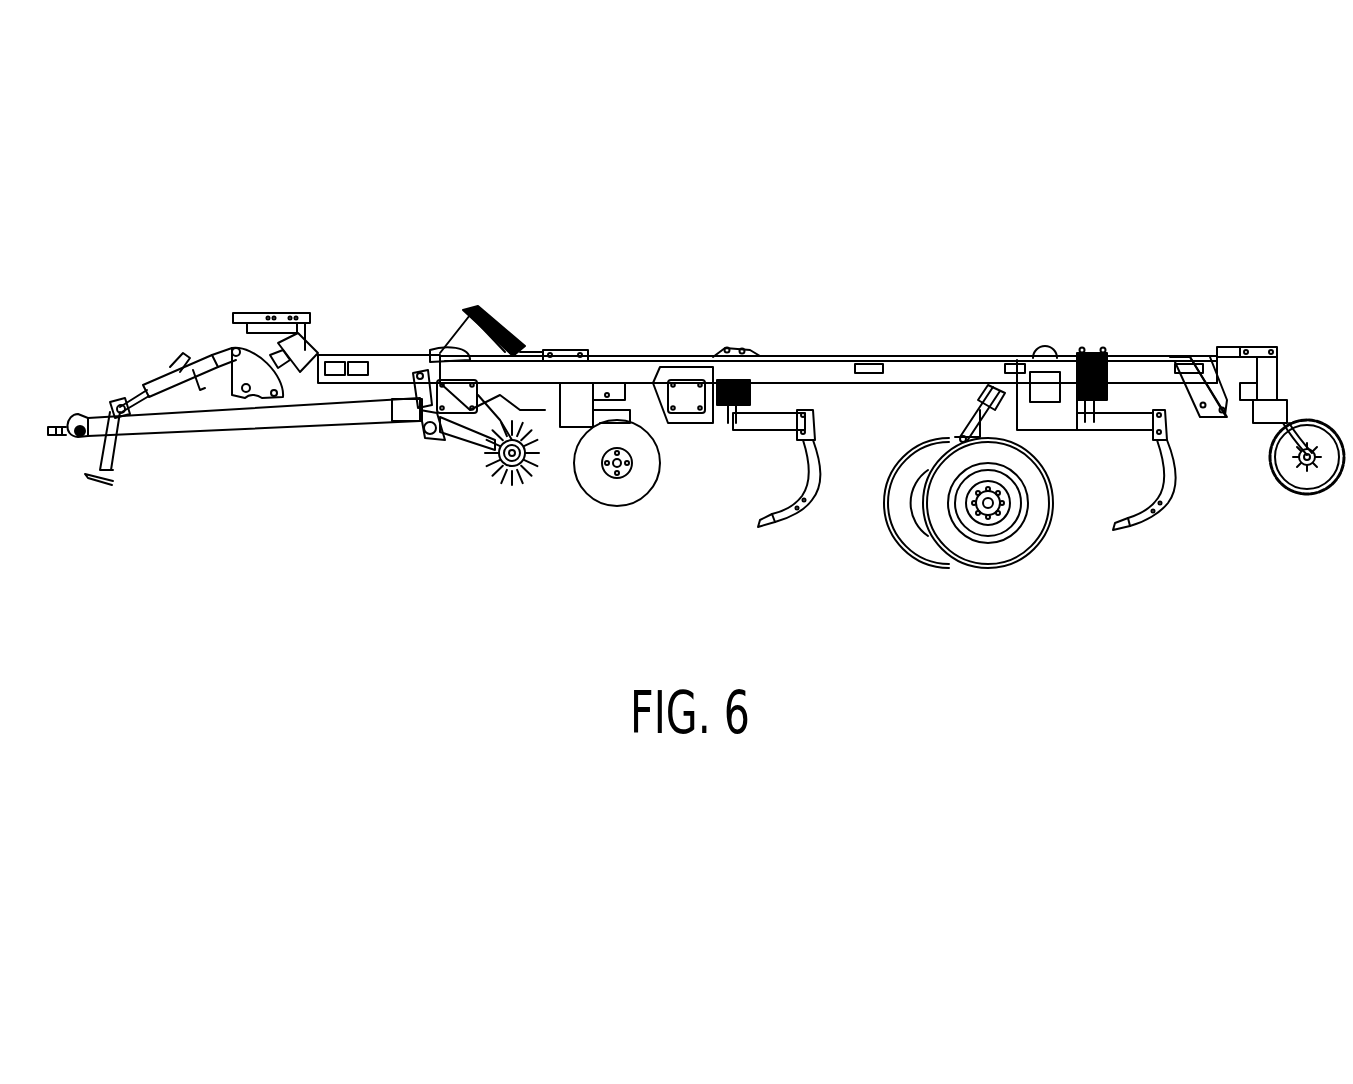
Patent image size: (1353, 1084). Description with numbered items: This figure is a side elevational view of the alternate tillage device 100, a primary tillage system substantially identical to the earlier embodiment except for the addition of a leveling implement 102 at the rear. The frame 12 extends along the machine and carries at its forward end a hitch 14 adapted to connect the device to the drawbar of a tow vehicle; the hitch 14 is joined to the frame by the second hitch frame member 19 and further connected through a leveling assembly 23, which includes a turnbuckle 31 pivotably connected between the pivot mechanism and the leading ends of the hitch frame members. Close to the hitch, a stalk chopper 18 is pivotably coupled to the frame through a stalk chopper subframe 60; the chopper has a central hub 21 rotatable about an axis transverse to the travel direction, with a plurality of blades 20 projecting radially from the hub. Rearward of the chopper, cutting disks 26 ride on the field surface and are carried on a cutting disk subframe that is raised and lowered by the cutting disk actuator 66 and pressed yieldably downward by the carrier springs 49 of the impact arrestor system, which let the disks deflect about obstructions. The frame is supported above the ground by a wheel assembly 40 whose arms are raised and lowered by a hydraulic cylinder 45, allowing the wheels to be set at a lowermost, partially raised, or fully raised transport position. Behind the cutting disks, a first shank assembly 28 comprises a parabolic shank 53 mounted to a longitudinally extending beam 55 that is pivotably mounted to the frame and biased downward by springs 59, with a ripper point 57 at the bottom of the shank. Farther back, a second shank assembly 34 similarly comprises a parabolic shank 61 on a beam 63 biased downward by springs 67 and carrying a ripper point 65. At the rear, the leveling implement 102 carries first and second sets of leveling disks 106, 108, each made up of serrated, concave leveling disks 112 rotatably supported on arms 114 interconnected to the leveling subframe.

The frame 12 is at (850, 351).
The hitch 14 is at (70, 421).
The stalk chopper 18 is at (423, 441).
The second hitch frame member 19 is at (196, 430).
The blades 20 is at (517, 473).
The central hub 21 is at (490, 460).
The leveling assembly 23 is at (222, 338).
The disks 26 is at (602, 499).
The shank assembly 28 is at (813, 407).
The turnbuckle 31 is at (168, 378).
The shank assembly 34 is at (1159, 405).
The wheel assembly 40 is at (999, 572).
The hydraulic cylinder 45 is at (996, 391).
The carrier springs 49 is at (487, 317).
The parabolic shank 53 is at (812, 490).
The beam 55 is at (755, 413).
The ripper point 57 is at (763, 530).
The springs 59 is at (716, 382).
The stalk chopper subframe 60 is at (426, 429).
The parabolic shank 61 is at (1170, 492).
The beam 63 is at (1111, 421).
The ripper point 65 is at (1118, 528).
The cutting disk actuator 66 is at (545, 350).
The springs 67 is at (1100, 352).
The tillage device 100 is at (322, 553).
The leveling implement 102 is at (484, 510).
The first set of leveling disks 106 is at (819, 541).
The second set of leveling disks 108 is at (1241, 408).
The leveling disks 112 is at (1310, 432).
The arms 114 is at (1278, 490).